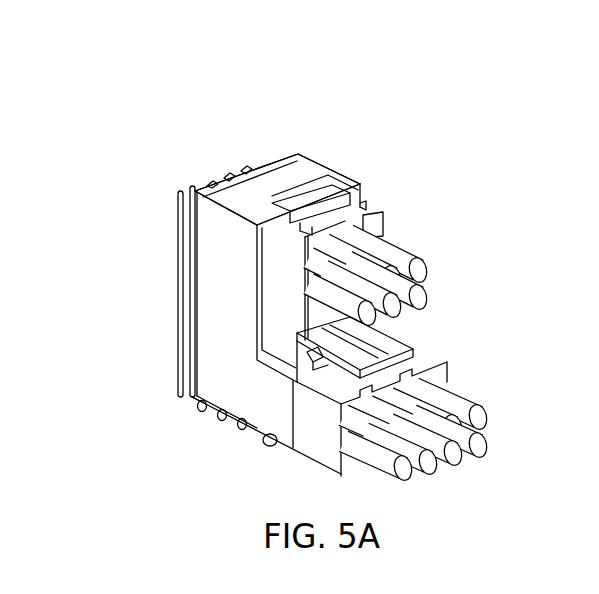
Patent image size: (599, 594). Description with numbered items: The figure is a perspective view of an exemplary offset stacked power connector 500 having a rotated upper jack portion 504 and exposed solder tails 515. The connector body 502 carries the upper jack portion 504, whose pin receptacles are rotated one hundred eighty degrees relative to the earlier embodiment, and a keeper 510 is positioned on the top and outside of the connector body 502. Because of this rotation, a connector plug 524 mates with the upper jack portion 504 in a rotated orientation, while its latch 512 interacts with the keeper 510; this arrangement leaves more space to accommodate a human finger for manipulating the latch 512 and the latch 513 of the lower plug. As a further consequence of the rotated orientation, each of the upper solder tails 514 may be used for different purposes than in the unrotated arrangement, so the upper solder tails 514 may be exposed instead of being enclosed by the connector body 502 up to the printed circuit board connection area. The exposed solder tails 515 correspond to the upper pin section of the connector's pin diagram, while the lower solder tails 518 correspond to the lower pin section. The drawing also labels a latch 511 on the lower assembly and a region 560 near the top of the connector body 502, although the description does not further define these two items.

The offset stacked power connector 500 is at (106, 62).
The connector body 502 is at (242, 333).
The upper jack portion 504 is at (252, 224).
The keeper 510 is at (273, 202).
The lower latch 511 is at (312, 353).
The latch 512 is at (300, 188).
The latch 513 is at (372, 342).
The upper solder tails 514 is at (188, 402).
The exposed solder tails 515 is at (242, 181).
The lower solder tails 518 is at (242, 422).
The connector plug 524 is at (363, 210).
The top mating face 560 is at (276, 146).